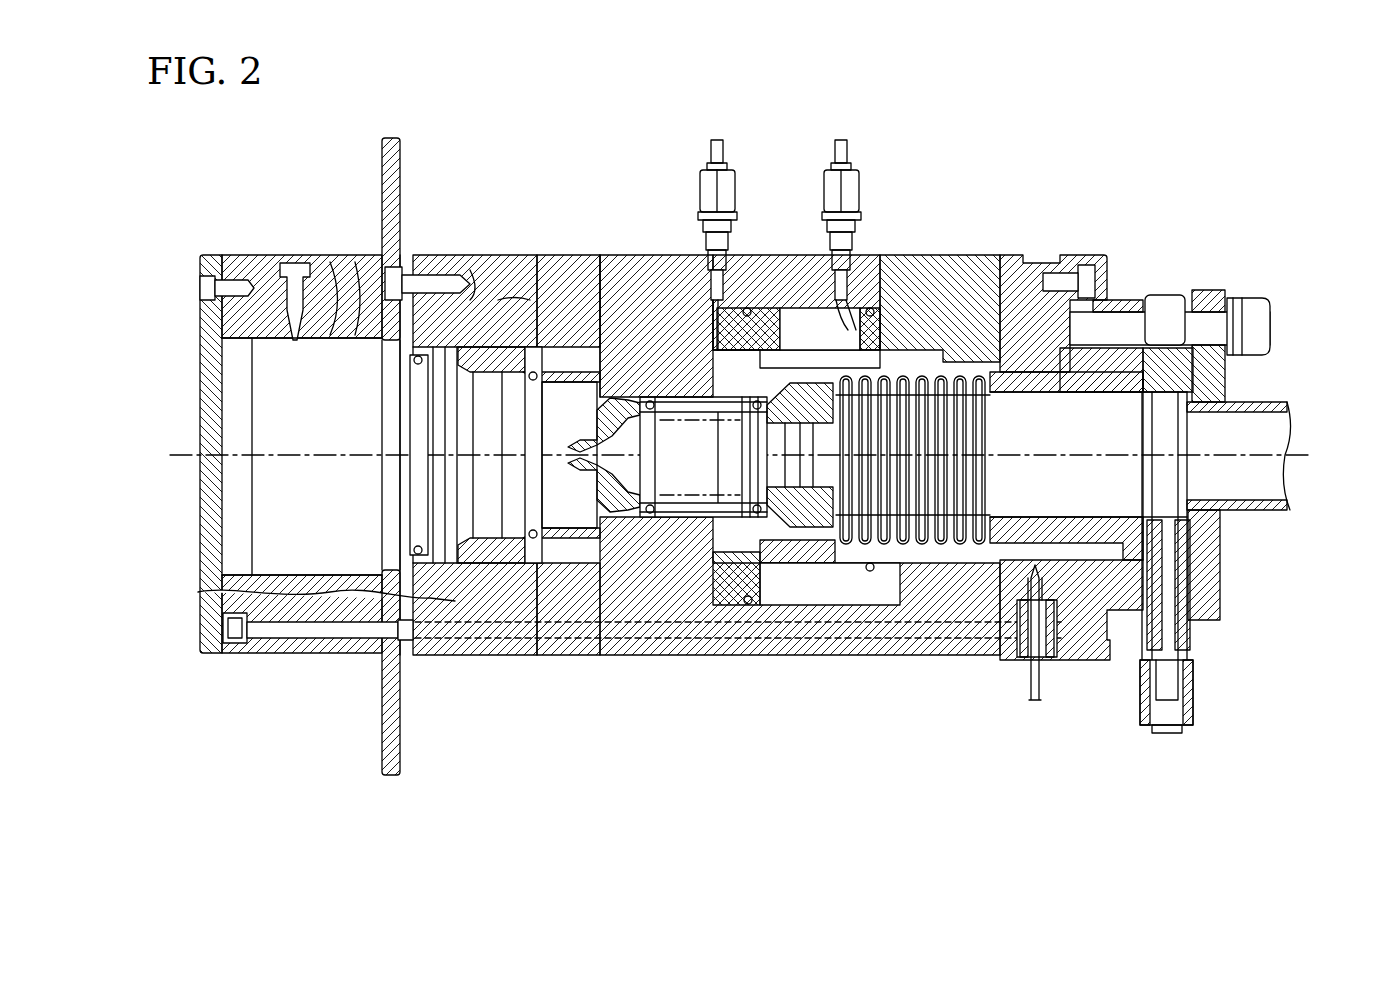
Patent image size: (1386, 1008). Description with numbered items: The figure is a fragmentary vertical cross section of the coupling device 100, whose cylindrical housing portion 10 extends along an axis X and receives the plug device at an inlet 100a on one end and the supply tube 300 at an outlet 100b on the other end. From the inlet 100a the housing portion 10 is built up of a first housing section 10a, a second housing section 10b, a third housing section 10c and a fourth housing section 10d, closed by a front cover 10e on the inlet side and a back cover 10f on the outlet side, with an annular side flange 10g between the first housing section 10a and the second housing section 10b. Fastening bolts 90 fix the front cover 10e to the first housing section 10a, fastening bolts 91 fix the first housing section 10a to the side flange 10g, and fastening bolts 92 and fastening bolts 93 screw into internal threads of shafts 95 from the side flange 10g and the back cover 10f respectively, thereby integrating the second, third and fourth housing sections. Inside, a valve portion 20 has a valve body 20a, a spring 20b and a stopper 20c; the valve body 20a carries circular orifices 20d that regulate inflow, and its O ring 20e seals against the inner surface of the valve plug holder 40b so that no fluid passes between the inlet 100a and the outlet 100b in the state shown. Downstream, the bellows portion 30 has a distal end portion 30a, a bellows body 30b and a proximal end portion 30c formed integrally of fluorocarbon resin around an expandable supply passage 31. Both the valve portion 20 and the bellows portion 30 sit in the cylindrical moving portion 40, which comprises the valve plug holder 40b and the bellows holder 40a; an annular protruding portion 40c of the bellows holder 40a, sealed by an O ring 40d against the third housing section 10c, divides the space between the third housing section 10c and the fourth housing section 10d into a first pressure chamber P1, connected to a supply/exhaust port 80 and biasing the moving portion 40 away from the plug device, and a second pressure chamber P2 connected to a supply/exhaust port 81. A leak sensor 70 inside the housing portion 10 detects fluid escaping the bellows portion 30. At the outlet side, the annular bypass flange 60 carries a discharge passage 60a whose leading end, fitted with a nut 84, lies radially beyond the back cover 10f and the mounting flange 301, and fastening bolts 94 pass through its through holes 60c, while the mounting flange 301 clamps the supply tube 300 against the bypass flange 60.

The housing portion 10 is at (670, 487).
The first housing section 10a is at (340, 658).
The second housing section 10b is at (470, 658).
The third housing section 10c is at (572, 658).
The fourth housing section 10d is at (905, 658).
The front cover 10e is at (212, 660).
The back cover 10f is at (1071, 527).
The side flange 10g is at (388, 152).
The valve portion 20 is at (588, 481).
The valve body 20a is at (596, 480).
The spring 20b is at (628, 500).
The stopper 20c is at (672, 530).
The orifices 20d is at (648, 420).
The O ring 20e is at (604, 420).
The bellows portion 30 is at (975, 455).
The distal end portion 30a is at (828, 537).
The bellows body 30b is at (927, 600).
The proximal end portion 30c is at (1102, 543).
The supply passage 31 is at (1035, 418).
The moving portion 40 is at (738, 389).
The bellows holder 40a is at (793, 338).
The valve plug holder 40b is at (590, 342).
The annular protruding portion 40c is at (790, 605).
The O ring 40d is at (748, 610).
The bypass flange 60 is at (1173, 436).
The discharge passage 60a is at (1168, 620).
The through holes 60c is at (1172, 336).
The leak sensor 70 is at (1019, 578).
The supply/exhaust port 80 is at (700, 181).
The supply/exhaust port 81 is at (862, 182).
The nut 84 is at (1195, 690).
The fastening bolts 90 is at (207, 268).
The fastening bolts 91 is at (285, 640).
The fastening bolts 92 is at (428, 272).
The fastening bolts 93 is at (1078, 275).
The fastening bolts 94 is at (1272, 320).
The shafts 95 is at (487, 265).
The coupling device 100 is at (1133, 170).
The inlet 100a is at (233, 540).
The outlet 100b is at (1120, 432).
The supply tube 300 is at (1246, 511).
The mounting flange 301 is at (1228, 600).
The first pressure chamber P1 is at (700, 313).
The second pressure chamber P2 is at (817, 317).
The axis X is at (178, 445).